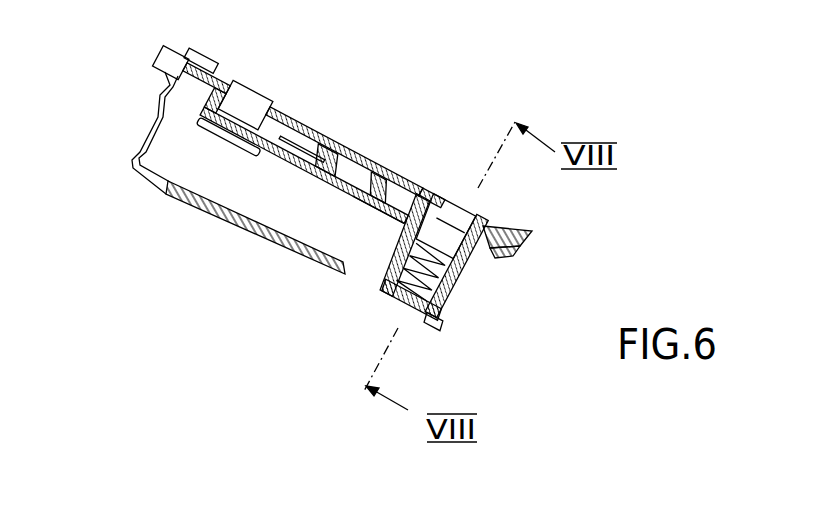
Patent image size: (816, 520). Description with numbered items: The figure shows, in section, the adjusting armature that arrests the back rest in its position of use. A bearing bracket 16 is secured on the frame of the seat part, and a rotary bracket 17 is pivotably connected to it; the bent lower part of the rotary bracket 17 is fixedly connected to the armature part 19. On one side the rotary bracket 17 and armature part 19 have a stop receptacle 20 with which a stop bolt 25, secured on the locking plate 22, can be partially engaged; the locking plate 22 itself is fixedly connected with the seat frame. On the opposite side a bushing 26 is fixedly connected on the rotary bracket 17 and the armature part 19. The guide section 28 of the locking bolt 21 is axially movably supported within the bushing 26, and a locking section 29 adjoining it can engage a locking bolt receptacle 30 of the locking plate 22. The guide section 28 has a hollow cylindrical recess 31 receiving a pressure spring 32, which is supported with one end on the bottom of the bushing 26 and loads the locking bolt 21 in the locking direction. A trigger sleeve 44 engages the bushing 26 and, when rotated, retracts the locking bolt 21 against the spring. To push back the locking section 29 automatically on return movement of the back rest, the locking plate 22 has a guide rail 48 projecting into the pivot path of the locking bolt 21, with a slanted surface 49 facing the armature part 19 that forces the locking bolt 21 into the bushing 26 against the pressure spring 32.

The bearing bracket 16 is at (193, 206).
The rotary bracket 17 is at (392, 208).
The armature part 19 is at (330, 145).
The stop receptacle 20 is at (224, 101).
The locking bolt 21 is at (463, 210).
The locking plate 22 is at (312, 130).
The stop bolt 25 is at (254, 96).
The bushing 26 is at (398, 305).
The guide section 28 is at (465, 283).
The locking section 29 is at (458, 233).
The locking bolt receptacle 30 is at (437, 197).
The hollow cylindrical recess 31 is at (440, 322).
The pressure spring 32 is at (420, 322).
The trigger sleeve 44 is at (455, 310).
The guide rail 48 is at (528, 233).
The slanted surface 49 is at (512, 252).